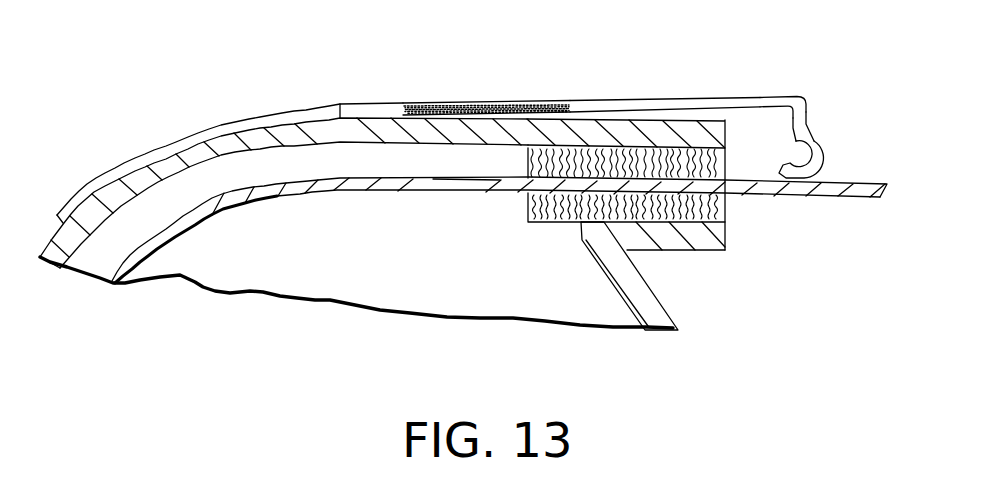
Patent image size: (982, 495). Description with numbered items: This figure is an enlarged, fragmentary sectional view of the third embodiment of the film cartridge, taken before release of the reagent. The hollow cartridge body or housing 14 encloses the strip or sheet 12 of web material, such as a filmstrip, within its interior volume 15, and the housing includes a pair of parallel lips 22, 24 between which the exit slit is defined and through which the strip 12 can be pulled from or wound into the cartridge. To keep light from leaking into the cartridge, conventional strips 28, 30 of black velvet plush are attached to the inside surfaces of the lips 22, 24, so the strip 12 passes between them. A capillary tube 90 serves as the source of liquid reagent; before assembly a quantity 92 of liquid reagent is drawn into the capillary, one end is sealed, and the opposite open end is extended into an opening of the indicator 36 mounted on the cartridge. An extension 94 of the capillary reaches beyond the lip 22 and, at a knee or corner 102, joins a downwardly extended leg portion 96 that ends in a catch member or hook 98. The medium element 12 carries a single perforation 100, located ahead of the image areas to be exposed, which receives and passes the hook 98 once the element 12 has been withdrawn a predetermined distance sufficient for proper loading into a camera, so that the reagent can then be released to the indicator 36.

The indicator 36 is at (130, 163).
The capillary tube 90 is at (378, 110).
The quantity of liquid reagent 92 is at (518, 102).
The lip 22 is at (693, 133).
The extension of the capillary 94 is at (730, 96).
The common knee or corner 102 is at (802, 94).
The leg portion 96 is at (810, 110).
The catch member or hook 98 is at (823, 141).
The strip of black velvet plush 28 is at (727, 160).
The strip of black velvet plush 30 is at (728, 210).
The lip 24 is at (700, 240).
The cartridge body or housing 14 is at (648, 289).
The perforation 100 is at (466, 182).
The interior volume 15 is at (458, 267).
The strip or sheet of web material 12 is at (218, 205).